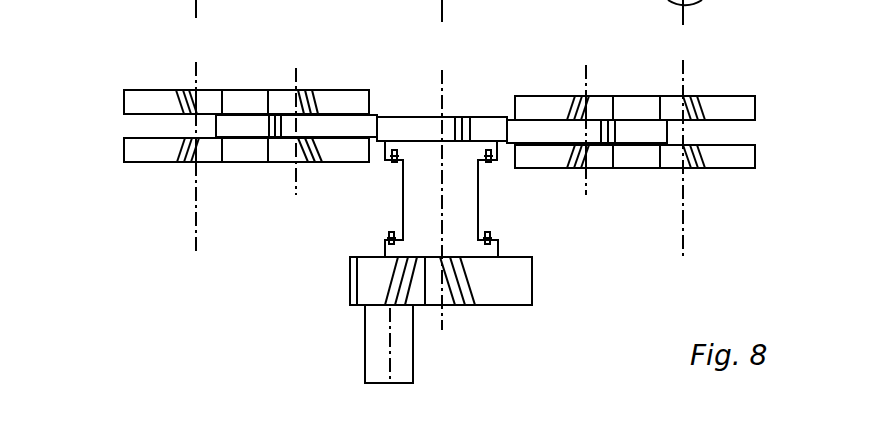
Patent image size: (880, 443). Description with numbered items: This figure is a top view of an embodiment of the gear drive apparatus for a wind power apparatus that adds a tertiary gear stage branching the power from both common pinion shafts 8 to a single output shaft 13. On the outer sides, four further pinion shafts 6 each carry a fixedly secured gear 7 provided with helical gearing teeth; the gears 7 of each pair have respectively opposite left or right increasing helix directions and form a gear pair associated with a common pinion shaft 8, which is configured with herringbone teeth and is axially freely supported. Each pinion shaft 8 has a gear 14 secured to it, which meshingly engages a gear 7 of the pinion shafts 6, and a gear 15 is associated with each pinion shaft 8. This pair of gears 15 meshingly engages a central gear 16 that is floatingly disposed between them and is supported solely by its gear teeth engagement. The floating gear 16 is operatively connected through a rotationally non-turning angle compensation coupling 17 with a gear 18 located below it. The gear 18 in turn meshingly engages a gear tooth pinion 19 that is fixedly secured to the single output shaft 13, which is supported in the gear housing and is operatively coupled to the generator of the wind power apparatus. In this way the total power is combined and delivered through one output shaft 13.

The further pinion shaft 6 is at (195, 63).
The gear 7 is at (138, 104).
The common pinion shaft 8 is at (296, 68).
The single output shaft 13 is at (375, 362).
The gear 14 is at (357, 108).
The gear 15 is at (322, 132).
The gear 16 is at (483, 125).
The angle compensation coupling 17 is at (403, 195).
The gear 18 is at (470, 288).
The gear tooth pinion 19 is at (372, 285).